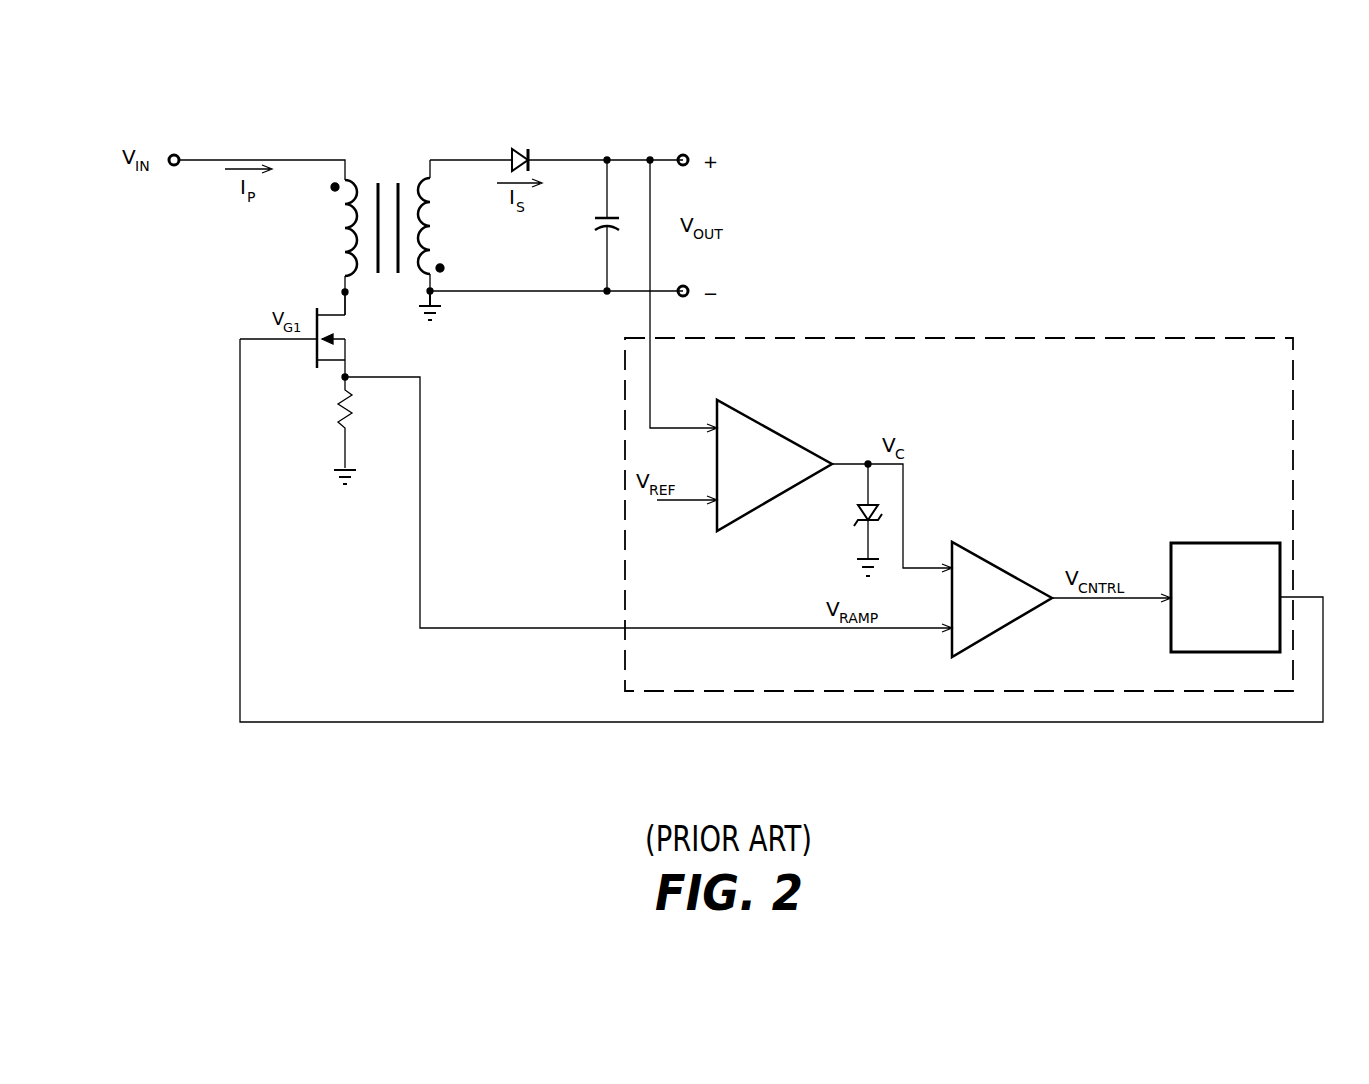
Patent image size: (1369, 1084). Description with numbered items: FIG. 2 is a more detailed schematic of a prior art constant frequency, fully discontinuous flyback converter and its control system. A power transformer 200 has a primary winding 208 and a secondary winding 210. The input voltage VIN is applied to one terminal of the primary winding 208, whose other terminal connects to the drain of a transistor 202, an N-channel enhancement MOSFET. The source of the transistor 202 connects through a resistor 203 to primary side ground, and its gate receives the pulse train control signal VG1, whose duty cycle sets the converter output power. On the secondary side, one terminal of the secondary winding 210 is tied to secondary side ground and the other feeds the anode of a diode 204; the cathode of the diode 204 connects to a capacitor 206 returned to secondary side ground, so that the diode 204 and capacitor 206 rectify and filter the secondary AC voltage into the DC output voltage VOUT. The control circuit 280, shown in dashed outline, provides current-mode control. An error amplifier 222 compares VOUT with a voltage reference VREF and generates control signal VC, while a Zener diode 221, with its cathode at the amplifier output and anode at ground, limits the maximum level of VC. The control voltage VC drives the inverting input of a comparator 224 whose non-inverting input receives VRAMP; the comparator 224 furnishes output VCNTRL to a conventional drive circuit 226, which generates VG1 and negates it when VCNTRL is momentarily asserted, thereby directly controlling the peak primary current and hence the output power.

The power transformer 200 is at (388, 189).
The transistor 202 is at (316, 344).
The resistor 203 is at (353, 412).
The diode 204 is at (522, 152).
The capacitor 206 is at (595, 222).
The primary winding 208 is at (345, 240).
The secondary winding 210 is at (428, 233).
The Zener diode 221 is at (858, 510).
The error amplifier 222 is at (778, 433).
The comparator 224 is at (988, 558).
The drive circuit 226 is at (1187, 543).
The control circuit 280 is at (1057, 333).